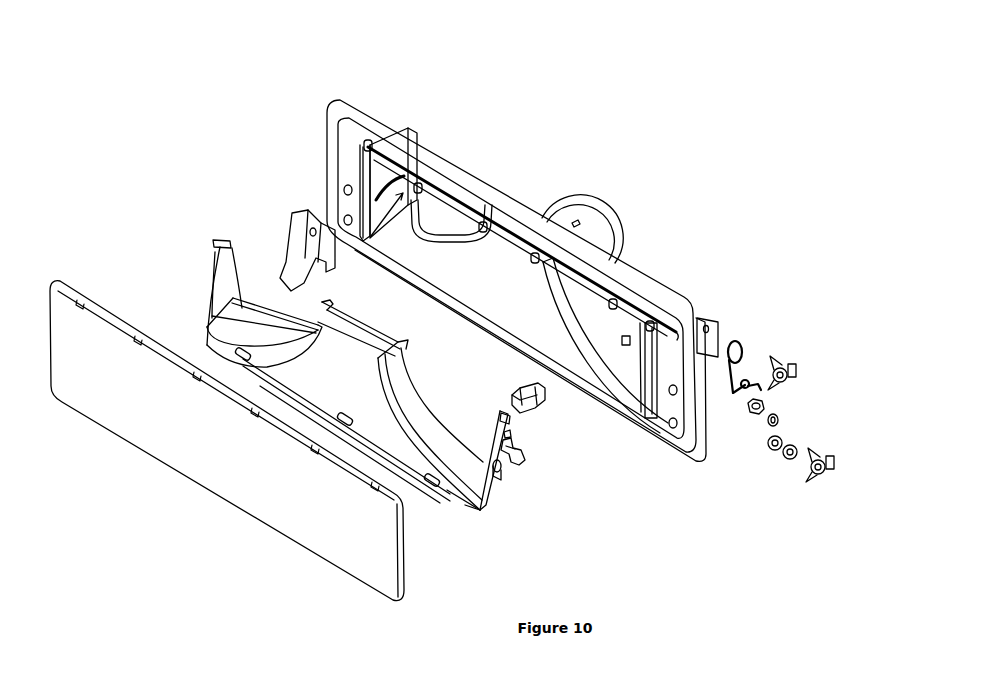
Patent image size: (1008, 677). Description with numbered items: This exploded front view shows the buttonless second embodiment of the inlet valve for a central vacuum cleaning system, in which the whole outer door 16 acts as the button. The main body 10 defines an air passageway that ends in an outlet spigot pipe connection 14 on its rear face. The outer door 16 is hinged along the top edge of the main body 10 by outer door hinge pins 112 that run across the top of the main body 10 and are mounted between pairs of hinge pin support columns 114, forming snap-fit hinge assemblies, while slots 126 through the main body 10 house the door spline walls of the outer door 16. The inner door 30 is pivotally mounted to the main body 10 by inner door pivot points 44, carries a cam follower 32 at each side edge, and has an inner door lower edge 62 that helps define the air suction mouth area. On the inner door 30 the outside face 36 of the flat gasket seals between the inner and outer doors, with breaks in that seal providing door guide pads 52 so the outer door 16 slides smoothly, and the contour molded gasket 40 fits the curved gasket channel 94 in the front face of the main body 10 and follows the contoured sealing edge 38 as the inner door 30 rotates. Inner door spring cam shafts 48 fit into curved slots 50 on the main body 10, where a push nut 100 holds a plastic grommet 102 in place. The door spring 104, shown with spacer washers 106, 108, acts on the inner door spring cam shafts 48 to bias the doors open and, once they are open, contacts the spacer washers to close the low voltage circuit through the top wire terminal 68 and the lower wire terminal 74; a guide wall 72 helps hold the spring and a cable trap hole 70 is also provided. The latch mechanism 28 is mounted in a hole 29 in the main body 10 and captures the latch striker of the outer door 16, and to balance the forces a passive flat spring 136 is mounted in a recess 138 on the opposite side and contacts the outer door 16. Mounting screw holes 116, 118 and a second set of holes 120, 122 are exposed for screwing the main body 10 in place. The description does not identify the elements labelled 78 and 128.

The main body 10 is at (724, 257).
The outlet spigot pipe connection 14 is at (511, 281).
The outer door 16 is at (428, 556).
The latch mechanism 28 is at (542, 406).
The hole 29 is at (641, 362).
The inner door 30 is at (195, 292).
The cam follower 32 is at (500, 480).
The outside face of flat gasket 36 is at (303, 407).
The sealing edge 38 is at (425, 273).
The contour molded gasket 40 is at (243, 306).
The inner door pivot points 44 is at (218, 238).
The inner door spring cam shaft 48 is at (522, 466).
The curved slot 50 is at (398, 165).
The door guide pads 52 is at (237, 359).
The inner door lower edge 62 is at (368, 458).
The top wire terminal 68 is at (790, 357).
The cable trap hole 70 is at (713, 319).
The guide wall 72 is at (716, 331).
The lower wire terminal 74 is at (828, 449).
The frame rim 78 is at (334, 126).
The gasket channel 94 is at (447, 243).
The push nut 100 is at (779, 418).
The plastic grommet 102 is at (756, 416).
The door spring 104 is at (737, 342).
The spacer washer 106 is at (789, 461).
The spacer washer 108 is at (771, 452).
The outer door hinge pins 112 is at (408, 170).
The hinge pin support columns 114 is at (369, 140).
The mounting screw hole 116 is at (344, 217).
The mounting screw hole 118 is at (676, 428).
The hole 120 is at (344, 186).
The hole 122 is at (678, 394).
The slots 126 is at (366, 244).
The hinge boss 128 is at (580, 199).
The passive flat spring 136 is at (300, 217).
The recess 138 is at (418, 193).